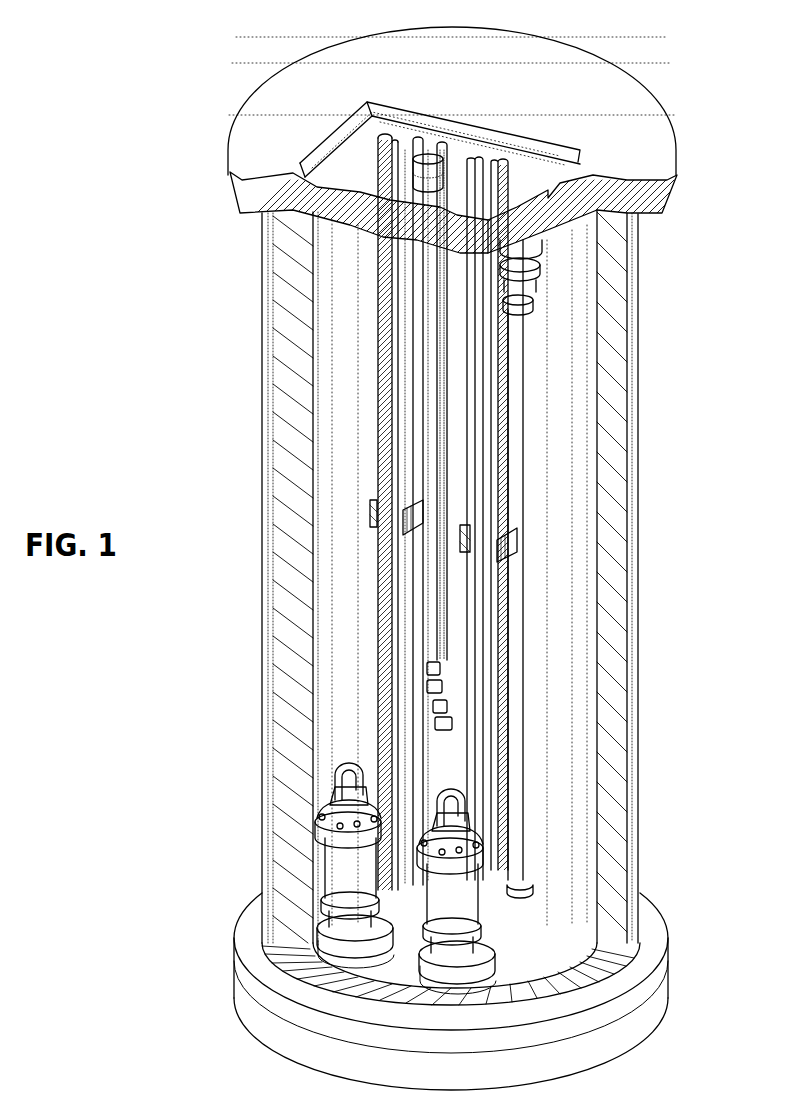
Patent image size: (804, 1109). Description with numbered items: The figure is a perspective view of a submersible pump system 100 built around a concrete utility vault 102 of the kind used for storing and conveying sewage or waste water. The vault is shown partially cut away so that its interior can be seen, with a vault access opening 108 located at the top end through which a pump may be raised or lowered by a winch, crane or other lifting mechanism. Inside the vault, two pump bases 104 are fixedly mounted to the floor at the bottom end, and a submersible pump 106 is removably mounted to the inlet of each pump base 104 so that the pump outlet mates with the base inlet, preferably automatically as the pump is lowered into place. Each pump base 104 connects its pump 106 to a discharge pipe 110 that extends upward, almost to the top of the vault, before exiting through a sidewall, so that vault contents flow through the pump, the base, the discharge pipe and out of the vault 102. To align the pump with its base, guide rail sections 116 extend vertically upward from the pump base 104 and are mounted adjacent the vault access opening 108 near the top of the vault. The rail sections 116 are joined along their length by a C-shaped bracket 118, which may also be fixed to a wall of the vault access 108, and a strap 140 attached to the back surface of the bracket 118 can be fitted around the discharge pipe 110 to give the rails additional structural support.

The submersible pump system 100 is at (130, 92).
The concrete utility vault 102 is at (617, 100).
The pump base 104 is at (595, 930).
The pump 106 is at (348, 856).
The vault access opening 108 is at (355, 163).
The discharge pipe 110 is at (518, 381).
The guide rail section 116 is at (545, 172).
The bracket 118 is at (515, 545).
The strap 140 is at (520, 516).